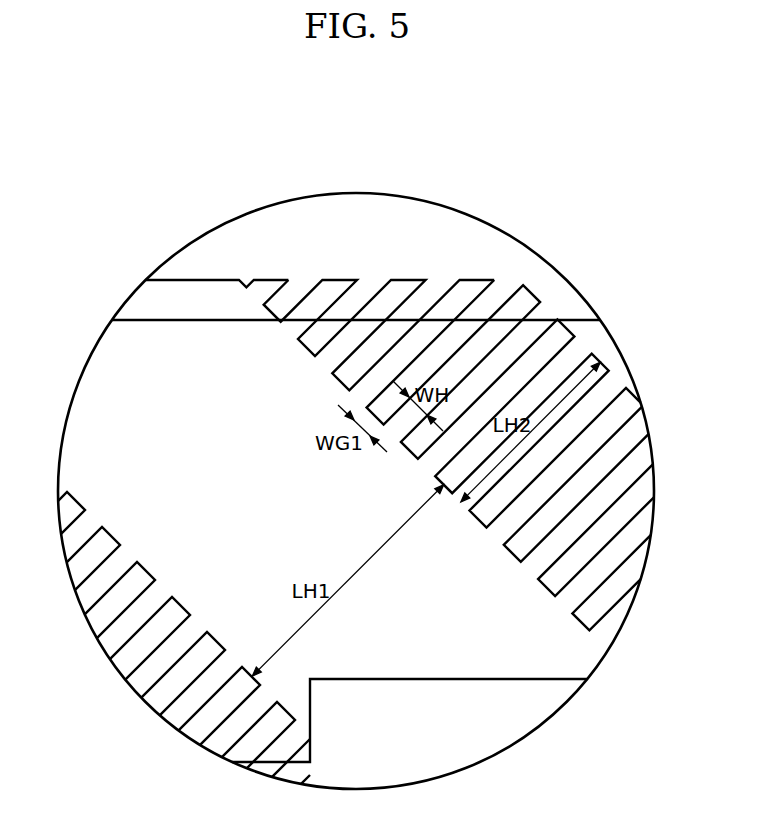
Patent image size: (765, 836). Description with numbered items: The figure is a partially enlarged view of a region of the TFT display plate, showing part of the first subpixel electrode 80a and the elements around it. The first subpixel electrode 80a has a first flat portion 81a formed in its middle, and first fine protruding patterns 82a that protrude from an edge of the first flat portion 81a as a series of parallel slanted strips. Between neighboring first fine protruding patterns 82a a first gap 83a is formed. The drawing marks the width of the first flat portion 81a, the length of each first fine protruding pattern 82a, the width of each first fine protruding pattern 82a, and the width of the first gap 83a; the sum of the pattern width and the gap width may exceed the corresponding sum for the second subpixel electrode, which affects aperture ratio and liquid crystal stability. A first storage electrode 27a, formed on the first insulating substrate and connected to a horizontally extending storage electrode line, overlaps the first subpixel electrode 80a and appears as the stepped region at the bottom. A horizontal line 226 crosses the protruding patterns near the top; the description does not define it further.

The first subpixel electrode 80a is at (222, 127).
The first flat portion 81a is at (230, 373).
The first fine protruding patterns 82a is at (338, 356).
The first gap 83a is at (353, 363).
The boundary line 226 is at (546, 320).
The first storage electrode 27a is at (487, 721).